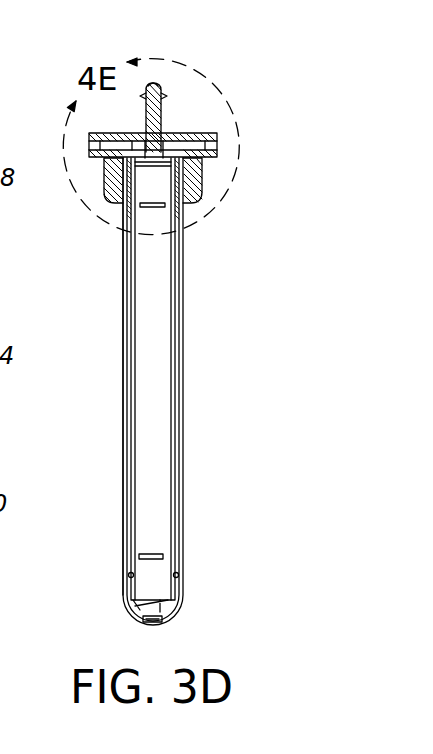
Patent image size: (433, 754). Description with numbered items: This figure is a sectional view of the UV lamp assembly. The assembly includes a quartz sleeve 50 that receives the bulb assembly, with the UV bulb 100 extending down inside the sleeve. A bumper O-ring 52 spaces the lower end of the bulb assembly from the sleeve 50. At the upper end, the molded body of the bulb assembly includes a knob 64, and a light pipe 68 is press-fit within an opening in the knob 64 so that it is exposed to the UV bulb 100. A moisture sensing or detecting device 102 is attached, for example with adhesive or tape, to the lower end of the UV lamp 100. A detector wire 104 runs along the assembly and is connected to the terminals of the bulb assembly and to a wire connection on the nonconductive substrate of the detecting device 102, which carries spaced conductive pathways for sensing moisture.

The quartz sleeve 50 is at (183, 396).
The bumper O-ring 52 is at (179, 576).
The knob 64 is at (165, 95).
The light pipe 68 is at (149, 82).
The UV bulb 100 is at (171, 460).
The moisture detecting device 102 is at (133, 620).
The detector wire 104 is at (123, 283).